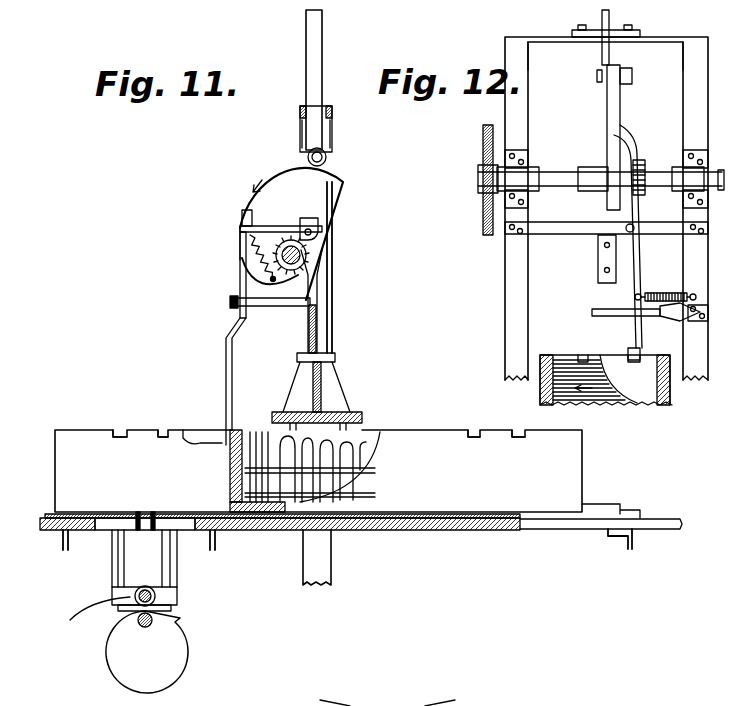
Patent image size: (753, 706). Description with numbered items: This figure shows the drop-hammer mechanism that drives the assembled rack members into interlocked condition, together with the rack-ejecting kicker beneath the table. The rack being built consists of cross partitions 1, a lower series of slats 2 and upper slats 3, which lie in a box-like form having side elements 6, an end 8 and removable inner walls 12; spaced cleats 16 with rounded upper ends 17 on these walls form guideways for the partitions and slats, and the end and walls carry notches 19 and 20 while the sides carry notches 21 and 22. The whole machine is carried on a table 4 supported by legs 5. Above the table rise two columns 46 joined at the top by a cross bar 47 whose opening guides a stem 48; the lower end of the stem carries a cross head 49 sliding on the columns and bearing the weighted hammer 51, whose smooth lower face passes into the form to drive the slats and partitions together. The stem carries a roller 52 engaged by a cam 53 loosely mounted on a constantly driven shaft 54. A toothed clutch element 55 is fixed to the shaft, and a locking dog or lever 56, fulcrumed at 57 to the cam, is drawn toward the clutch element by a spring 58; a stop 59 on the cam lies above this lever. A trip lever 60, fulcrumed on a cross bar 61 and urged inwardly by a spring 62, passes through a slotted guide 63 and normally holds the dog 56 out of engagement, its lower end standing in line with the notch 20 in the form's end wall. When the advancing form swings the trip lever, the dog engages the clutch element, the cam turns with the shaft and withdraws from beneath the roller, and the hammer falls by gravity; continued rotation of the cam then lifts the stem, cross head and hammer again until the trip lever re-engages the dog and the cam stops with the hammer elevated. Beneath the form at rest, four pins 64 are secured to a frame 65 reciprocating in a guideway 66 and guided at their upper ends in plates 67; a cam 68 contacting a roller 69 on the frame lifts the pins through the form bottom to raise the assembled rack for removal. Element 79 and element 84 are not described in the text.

In FIG. 11, the cross partitions 1 is at (305, 478).
In FIG. 11, the lower series of slats 2 is at (296, 504).
In FIG. 11, the slats of the upper series 3 is at (305, 465).
In FIG. 11, the table 4 is at (460, 531).
In FIG. 11, the legs 5 is at (335, 582).
In FIG. 11, the side element 6 is at (347, 474).
In FIG. 12, the end 8 is at (600, 398).
In FIG. 12, the wall 12 is at (641, 403).
In FIG. 11, the guide members or cleats 16 is at (362, 445).
In FIG. 11, the rounded upper end 17 is at (283, 440).
In FIG. 12, the slot or notch 19 is at (583, 355).
In FIG. 12, the slot or notch 20 is at (638, 370).
In FIG. 11, the notch 21 is at (163, 437).
In FIG. 11, the notch 22 is at (115, 437).
In FIG. 11, the column 46 is at (334, 318).
In FIG. 12, the column 46 is at (512, 288).
In FIG. 11, the cross bar 47 is at (300, 112).
In FIG. 12, the cross bar 47 is at (547, 45).
In FIG. 11, the rod or stem 48 is at (322, 96).
In FIG. 12, the rod or stem 48 is at (602, 56).
In FIG. 11, the cross head or frame 49 is at (328, 345).
In FIG. 11, the weighted hammer 51 is at (331, 410).
In FIG. 11, the roller 52 is at (326, 159).
In FIG. 12, the roller 52 is at (634, 77).
In FIG. 11, the cam 53 is at (345, 187).
In FIG. 12, the cam 53 is at (624, 102).
In FIG. 11, the shaft 54 is at (292, 272).
In FIG. 12, the shaft 54 is at (556, 180).
In FIG. 11, the toothed clutch element 55 is at (310, 262).
In FIG. 12, the toothed clutch element 55 is at (644, 162).
In FIG. 11, the locking dog or lever 56 is at (272, 226).
In FIG. 11, the fulcrum 57 is at (322, 222).
In FIG. 11, the spring 58 is at (250, 256).
In FIG. 11, the stop 59 is at (241, 213).
In FIG. 11, the trip lever 60 is at (233, 367).
In FIG. 12, the trip lever 60 is at (637, 248).
In FIG. 11, the cross bar 61 is at (263, 306).
In FIG. 12, the cross bar 61 is at (568, 234).
In FIG. 12, the spring 62 is at (663, 292).
In FIG. 12, the slotted guide 63 is at (606, 316).
In FIG. 11, the pins 64 is at (165, 543).
In FIG. 11, the frame or cross head 65 is at (163, 598).
In FIG. 11, the guideway 66 is at (178, 580).
In FIG. 11, the plates 67 is at (155, 512).
In FIG. 11, the cam 68 is at (175, 665).
In FIG. 11, the roller 69 is at (90, 615).
In FIG. 11, the pin 79 is at (145, 629).
In FIG. 12, the hand wheel 84 is at (483, 156).